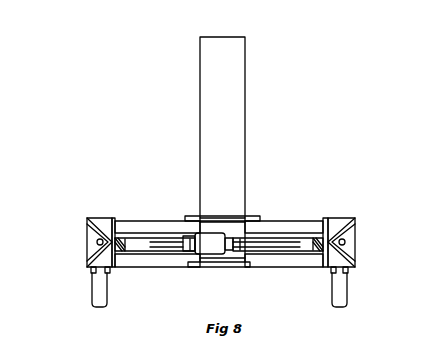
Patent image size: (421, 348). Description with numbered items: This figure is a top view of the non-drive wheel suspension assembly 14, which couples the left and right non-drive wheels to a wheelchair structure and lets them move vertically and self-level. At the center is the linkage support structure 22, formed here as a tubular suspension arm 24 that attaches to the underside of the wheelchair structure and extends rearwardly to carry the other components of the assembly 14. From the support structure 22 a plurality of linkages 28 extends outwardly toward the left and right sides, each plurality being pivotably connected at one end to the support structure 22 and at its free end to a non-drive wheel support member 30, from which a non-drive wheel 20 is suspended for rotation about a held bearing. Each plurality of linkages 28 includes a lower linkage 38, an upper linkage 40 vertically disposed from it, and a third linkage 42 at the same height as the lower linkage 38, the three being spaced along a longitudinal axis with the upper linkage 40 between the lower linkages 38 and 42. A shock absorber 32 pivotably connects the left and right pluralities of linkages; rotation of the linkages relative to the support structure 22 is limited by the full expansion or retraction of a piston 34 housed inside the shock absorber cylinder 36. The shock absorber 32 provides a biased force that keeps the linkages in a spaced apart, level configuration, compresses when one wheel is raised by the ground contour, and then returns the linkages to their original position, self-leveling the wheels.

The non-drive wheel suspension assembly 14 is at (310, 146).
The non-drive wheel 20 is at (102, 300).
The linkage support structure 22 is at (196, 148).
The tubular suspension arm 24 is at (215, 93).
The plurality of linkages 28 is at (168, 217).
The non-drive wheel support member 30 is at (82, 250).
The shock absorber 32 is at (226, 220).
The piston 34 is at (249, 231).
The shock absorber cylinder 36 is at (210, 216).
The lower linkage 38 is at (156, 260).
The upper linkage 40 is at (125, 219).
The third linkage 42 is at (148, 221).